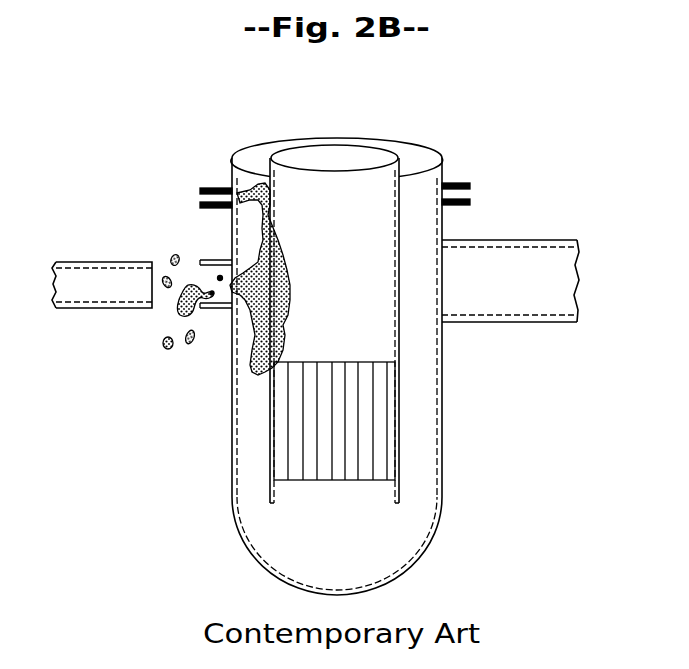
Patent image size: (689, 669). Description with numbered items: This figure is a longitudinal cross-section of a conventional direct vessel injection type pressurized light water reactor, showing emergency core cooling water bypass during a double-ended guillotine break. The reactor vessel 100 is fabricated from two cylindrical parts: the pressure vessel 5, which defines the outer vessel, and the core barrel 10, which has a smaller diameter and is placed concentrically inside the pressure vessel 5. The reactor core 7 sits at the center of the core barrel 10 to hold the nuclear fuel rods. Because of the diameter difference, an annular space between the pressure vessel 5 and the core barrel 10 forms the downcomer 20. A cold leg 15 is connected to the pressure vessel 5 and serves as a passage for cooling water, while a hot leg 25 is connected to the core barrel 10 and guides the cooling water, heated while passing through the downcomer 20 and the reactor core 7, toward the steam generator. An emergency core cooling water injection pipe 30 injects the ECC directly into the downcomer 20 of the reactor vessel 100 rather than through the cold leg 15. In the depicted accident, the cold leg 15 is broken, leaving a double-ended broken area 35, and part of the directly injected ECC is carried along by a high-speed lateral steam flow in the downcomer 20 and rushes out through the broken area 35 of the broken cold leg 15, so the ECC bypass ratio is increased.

The reactor vessel 100 is at (478, 84).
The core barrel 10 is at (422, 150).
The pressure vessel 5 is at (442, 168).
The downcomer 20 is at (417, 215).
The reactor core 7 is at (353, 422).
The emergency core cooling water injection pipe 30 is at (205, 188).
The cold leg 15 is at (103, 309).
The hot leg 25 is at (547, 241).
The double-ended broken area 35 is at (154, 272).